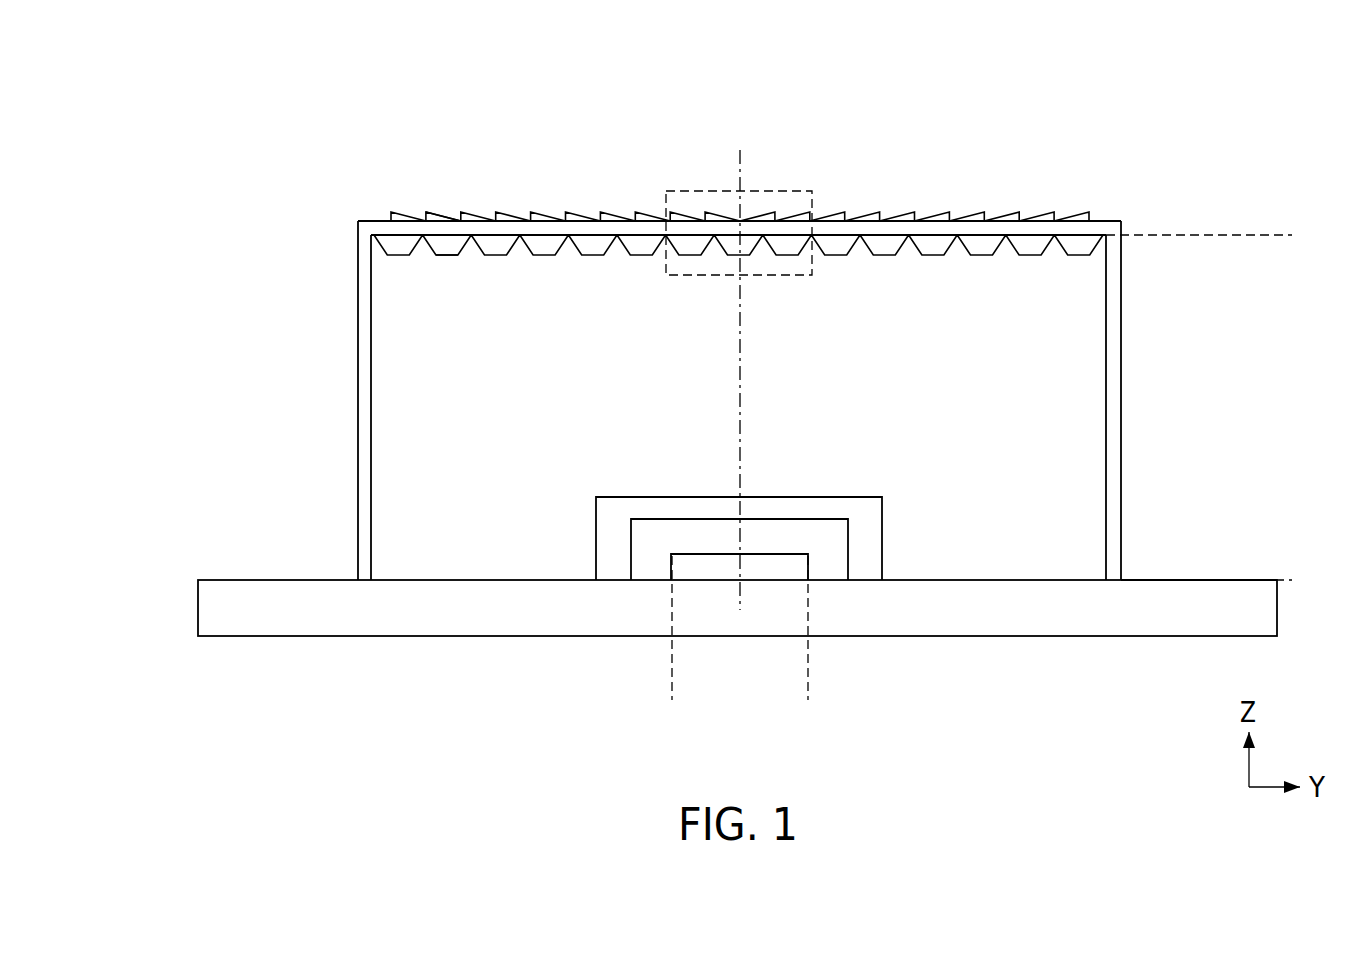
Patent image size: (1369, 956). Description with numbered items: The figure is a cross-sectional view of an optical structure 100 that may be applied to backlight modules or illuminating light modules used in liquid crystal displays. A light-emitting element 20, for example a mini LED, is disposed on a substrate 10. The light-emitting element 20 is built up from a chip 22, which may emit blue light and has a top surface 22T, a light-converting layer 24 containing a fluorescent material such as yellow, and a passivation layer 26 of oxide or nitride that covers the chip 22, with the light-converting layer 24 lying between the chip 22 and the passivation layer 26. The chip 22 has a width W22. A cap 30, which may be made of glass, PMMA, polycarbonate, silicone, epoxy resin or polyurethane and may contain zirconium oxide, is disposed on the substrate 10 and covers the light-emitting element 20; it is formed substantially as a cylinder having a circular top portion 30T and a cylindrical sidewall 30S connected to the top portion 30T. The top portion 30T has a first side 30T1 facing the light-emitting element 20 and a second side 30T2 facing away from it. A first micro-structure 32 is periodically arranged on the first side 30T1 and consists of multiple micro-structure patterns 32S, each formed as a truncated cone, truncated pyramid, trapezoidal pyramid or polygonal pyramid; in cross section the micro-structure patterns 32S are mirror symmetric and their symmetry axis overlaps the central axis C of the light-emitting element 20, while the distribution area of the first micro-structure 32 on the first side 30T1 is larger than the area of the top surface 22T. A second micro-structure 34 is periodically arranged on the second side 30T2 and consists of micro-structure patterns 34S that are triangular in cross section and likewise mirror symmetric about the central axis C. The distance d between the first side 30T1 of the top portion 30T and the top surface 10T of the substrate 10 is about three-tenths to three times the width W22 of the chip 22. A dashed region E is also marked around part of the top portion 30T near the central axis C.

The optical structure 100 is at (235, 107).
The substrate 10 is at (212, 606).
The top surface of the substrate 10T is at (1192, 562).
The light-emitting element 20 is at (653, 450).
The chip 22 is at (685, 562).
The top surface of the chip 22T is at (766, 537).
The light-converting layer 24 is at (660, 542).
The passivation layer 26 is at (615, 541).
The cap 30 is at (1272, 32).
The sidewall 30S is at (1116, 424).
The top portion 30T is at (772, 238).
The first side of the top portion 30T1 is at (981, 256).
The second side of the top portion 30T2 is at (1116, 210).
The first micro-structure 32 is at (626, 282).
The micro-structure pattern 32S is at (451, 256).
The second micro-structure 34 is at (570, 196).
The micro-structure pattern 34S is at (430, 212).
The width of the chip W22 is at (808, 695).
The distance d is at (1284, 235).
The central axis C is at (740, 363).
The enlarged region E is at (808, 191).